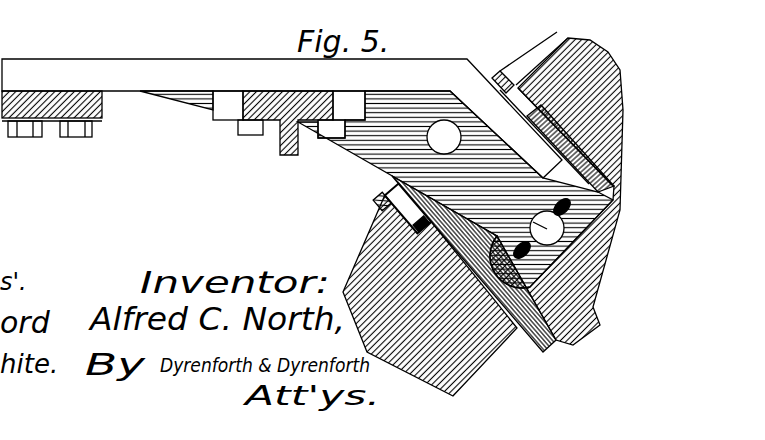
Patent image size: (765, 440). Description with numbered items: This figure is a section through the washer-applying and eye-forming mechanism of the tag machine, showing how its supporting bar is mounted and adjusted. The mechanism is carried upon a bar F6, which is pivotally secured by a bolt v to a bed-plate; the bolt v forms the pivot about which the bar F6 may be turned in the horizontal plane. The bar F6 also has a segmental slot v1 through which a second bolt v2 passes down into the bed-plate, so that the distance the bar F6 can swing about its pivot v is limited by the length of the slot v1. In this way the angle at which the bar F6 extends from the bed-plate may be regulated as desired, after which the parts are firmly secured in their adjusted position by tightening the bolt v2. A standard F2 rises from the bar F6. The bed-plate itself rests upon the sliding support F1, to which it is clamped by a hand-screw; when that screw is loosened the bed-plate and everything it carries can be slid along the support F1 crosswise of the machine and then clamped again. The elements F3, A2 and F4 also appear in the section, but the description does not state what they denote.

The bar F6 is at (168, 71).
The block F3 is at (78, 124).
The standard F2 is at (275, 123).
The carriage body A2 is at (376, 250).
The sliding support F1 is at (474, 264).
The clamp block F4 is at (430, 288).
The bolt v is at (429, 133).
The bolt v2 is at (529, 221).
The segmental slot v1 is at (555, 227).